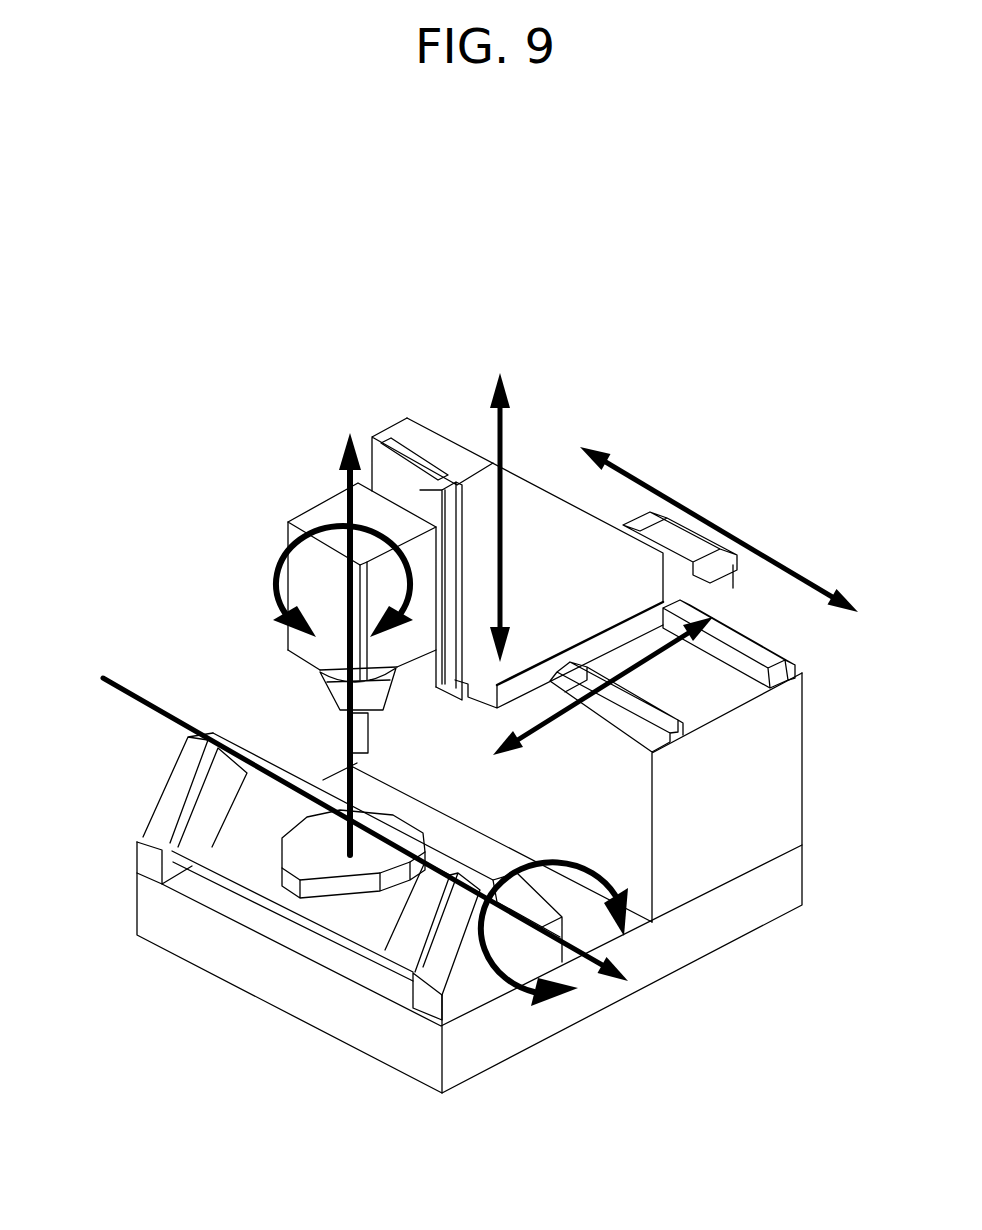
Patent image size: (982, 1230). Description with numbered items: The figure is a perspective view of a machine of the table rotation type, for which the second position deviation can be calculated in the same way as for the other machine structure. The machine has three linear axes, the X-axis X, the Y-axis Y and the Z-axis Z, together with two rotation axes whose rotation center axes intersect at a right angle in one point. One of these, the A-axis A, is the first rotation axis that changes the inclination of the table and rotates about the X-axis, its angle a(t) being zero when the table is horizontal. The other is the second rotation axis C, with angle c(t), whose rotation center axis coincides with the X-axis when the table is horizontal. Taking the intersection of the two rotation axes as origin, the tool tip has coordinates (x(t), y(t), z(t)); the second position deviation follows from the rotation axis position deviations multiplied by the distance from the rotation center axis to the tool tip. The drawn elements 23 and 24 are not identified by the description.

The workpiece 23 is at (305, 853).
The tool 24 is at (350, 740).
The A-axis A is at (365, 842).
The second rotation axis C is at (318, 644).
The X-axis X is at (719, 529).
The Y-axis Y is at (602, 711).
The Z-axis Z is at (516, 497).